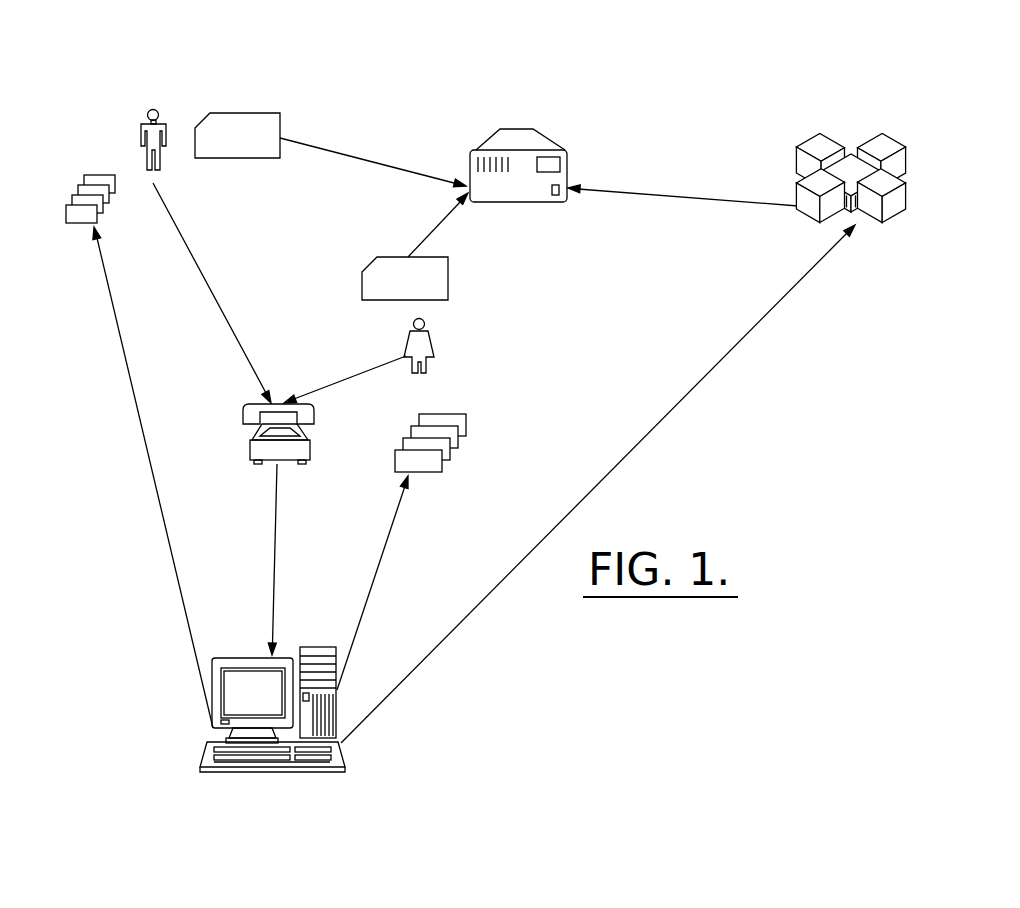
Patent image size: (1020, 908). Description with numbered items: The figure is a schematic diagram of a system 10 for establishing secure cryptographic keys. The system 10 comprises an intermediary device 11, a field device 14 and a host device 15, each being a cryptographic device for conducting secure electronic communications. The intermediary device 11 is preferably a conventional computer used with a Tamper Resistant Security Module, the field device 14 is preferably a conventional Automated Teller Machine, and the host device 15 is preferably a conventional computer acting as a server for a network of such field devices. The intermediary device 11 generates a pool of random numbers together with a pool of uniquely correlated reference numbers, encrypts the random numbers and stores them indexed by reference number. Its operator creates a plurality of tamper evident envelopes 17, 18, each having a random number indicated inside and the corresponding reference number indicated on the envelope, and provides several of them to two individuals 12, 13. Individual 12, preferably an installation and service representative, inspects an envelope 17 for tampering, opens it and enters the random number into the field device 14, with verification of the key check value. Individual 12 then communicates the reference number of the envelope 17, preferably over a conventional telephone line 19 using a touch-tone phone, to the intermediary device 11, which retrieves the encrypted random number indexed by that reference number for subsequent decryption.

The system 10 is at (675, 43).
The intermediary device 11 is at (242, 709).
The individual 12 is at (145, 121).
The individual 13 is at (436, 338).
The field device 14 is at (493, 142).
The host device 15 is at (862, 141).
The envelope 17 is at (243, 113).
The envelope 18 is at (370, 262).
The telephone line 19 is at (248, 446).